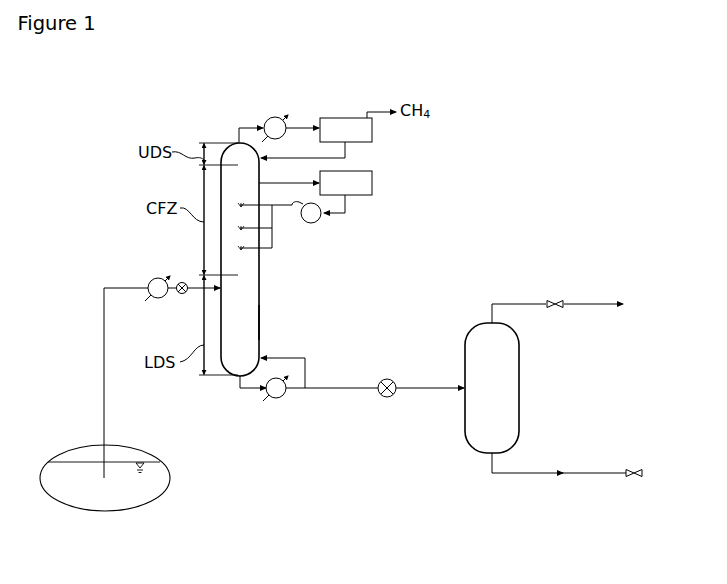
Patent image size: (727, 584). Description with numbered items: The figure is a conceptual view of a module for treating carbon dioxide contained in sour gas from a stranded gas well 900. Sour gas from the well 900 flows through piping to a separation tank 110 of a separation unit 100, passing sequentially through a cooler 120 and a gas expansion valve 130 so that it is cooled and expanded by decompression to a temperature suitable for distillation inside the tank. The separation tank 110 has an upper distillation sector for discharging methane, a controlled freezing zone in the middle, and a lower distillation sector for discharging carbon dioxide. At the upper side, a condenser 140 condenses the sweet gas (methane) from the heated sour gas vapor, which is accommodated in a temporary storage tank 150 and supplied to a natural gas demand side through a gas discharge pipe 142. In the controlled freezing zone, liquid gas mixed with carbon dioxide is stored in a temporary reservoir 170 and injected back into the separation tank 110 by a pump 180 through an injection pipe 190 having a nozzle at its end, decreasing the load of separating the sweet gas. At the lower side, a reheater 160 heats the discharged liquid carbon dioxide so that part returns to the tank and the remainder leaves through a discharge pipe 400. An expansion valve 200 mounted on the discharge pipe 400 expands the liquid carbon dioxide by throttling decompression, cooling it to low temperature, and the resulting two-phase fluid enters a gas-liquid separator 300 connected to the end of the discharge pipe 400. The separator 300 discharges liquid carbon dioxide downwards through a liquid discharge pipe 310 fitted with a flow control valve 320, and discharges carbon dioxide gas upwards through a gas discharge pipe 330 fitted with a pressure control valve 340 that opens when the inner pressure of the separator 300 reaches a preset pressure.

The separation unit 100 is at (268, 273).
The separation tank 110 is at (260, 321).
The cooler 120 is at (152, 281).
The gas expansion valve 130 is at (181, 294).
The condenser 140 is at (270, 121).
The gas discharge pipe 142 is at (367, 110).
The temporary storage tank 150 is at (373, 130).
The reheater 160 is at (266, 393).
The temporary reservoir 170 is at (373, 183).
The pump 180 is at (321, 220).
The injection pipe 190 is at (250, 207).
The expansion valve 200 is at (387, 378).
The gas-liquid separator 300 is at (465, 431).
The liquid discharge pipe 310 is at (527, 473).
The flow control valve 320 is at (633, 469).
The gas discharge pipe 330 is at (527, 304).
The pressure control valve 340 is at (556, 300).
The discharge pipe 400 is at (326, 390).
The stranded gas well 900 is at (166, 493).